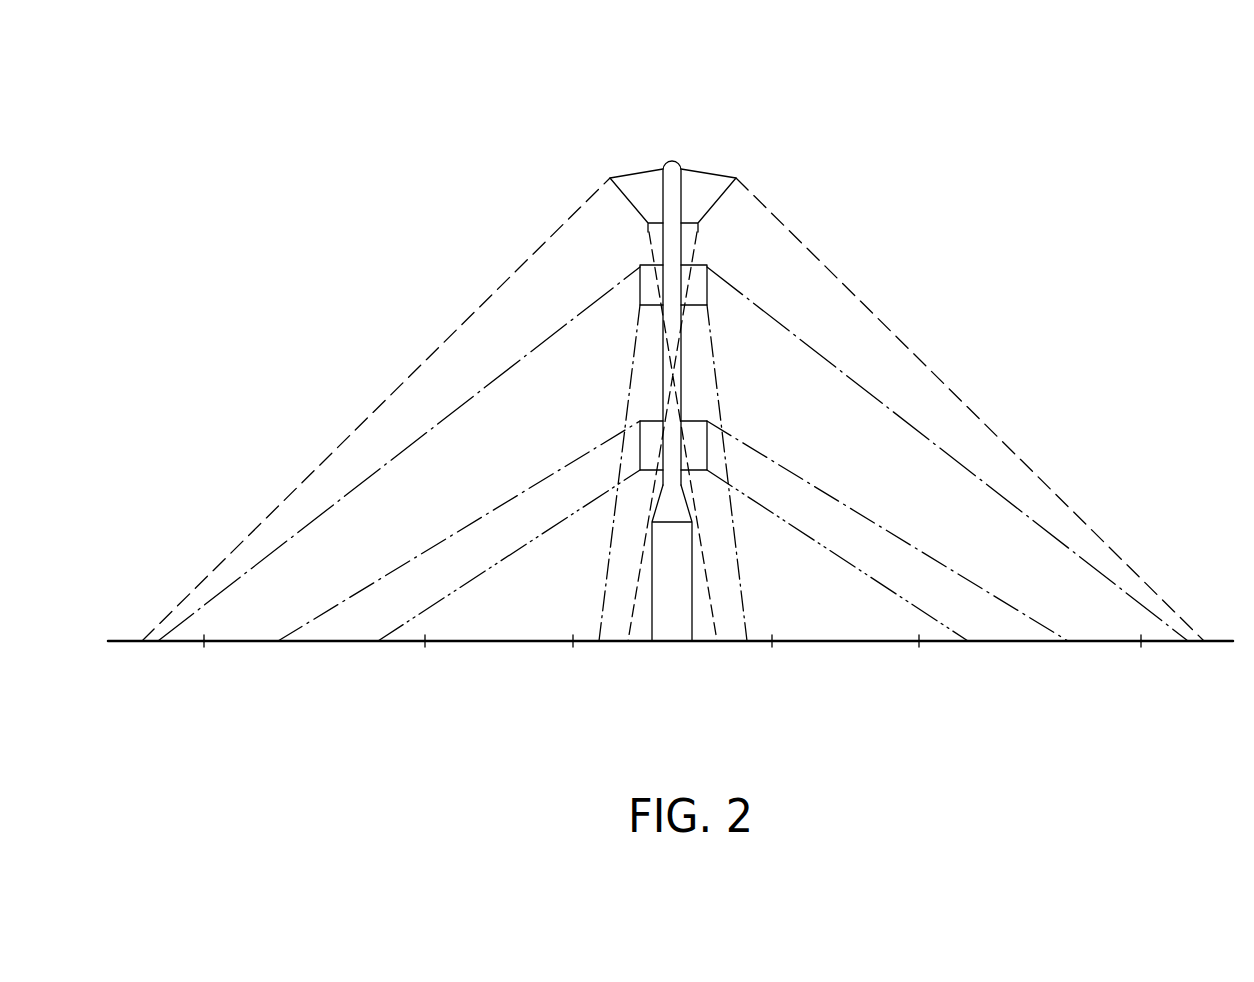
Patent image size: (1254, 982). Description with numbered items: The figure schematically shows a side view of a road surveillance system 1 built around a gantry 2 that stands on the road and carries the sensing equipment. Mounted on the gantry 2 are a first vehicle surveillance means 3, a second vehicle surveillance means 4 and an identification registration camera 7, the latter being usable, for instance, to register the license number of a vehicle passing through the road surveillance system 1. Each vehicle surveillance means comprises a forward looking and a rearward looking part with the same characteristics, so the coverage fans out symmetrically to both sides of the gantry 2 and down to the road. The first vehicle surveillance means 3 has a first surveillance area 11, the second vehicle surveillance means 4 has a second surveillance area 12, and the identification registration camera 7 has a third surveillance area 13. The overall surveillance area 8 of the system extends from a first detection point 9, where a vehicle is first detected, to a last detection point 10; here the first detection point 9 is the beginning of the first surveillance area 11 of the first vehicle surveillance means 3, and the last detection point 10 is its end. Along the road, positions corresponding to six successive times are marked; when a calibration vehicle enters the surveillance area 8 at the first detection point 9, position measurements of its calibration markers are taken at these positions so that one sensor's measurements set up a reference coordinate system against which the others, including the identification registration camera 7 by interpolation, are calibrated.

The road surveillance system 1 is at (176, 146).
The gantry 2 is at (673, 610).
The first vehicle surveillance means 3 is at (648, 186).
The second vehicle surveillance means 4 is at (639, 282).
The identification registration camera 7 is at (636, 426).
The surveillance area 8 is at (920, 360).
The first detection point 9 is at (154, 662).
The last detection point 10 is at (1191, 662).
The first surveillance area 11 is at (494, 336).
The second surveillance area 12 is at (483, 454).
The third surveillance area 13 is at (436, 561).